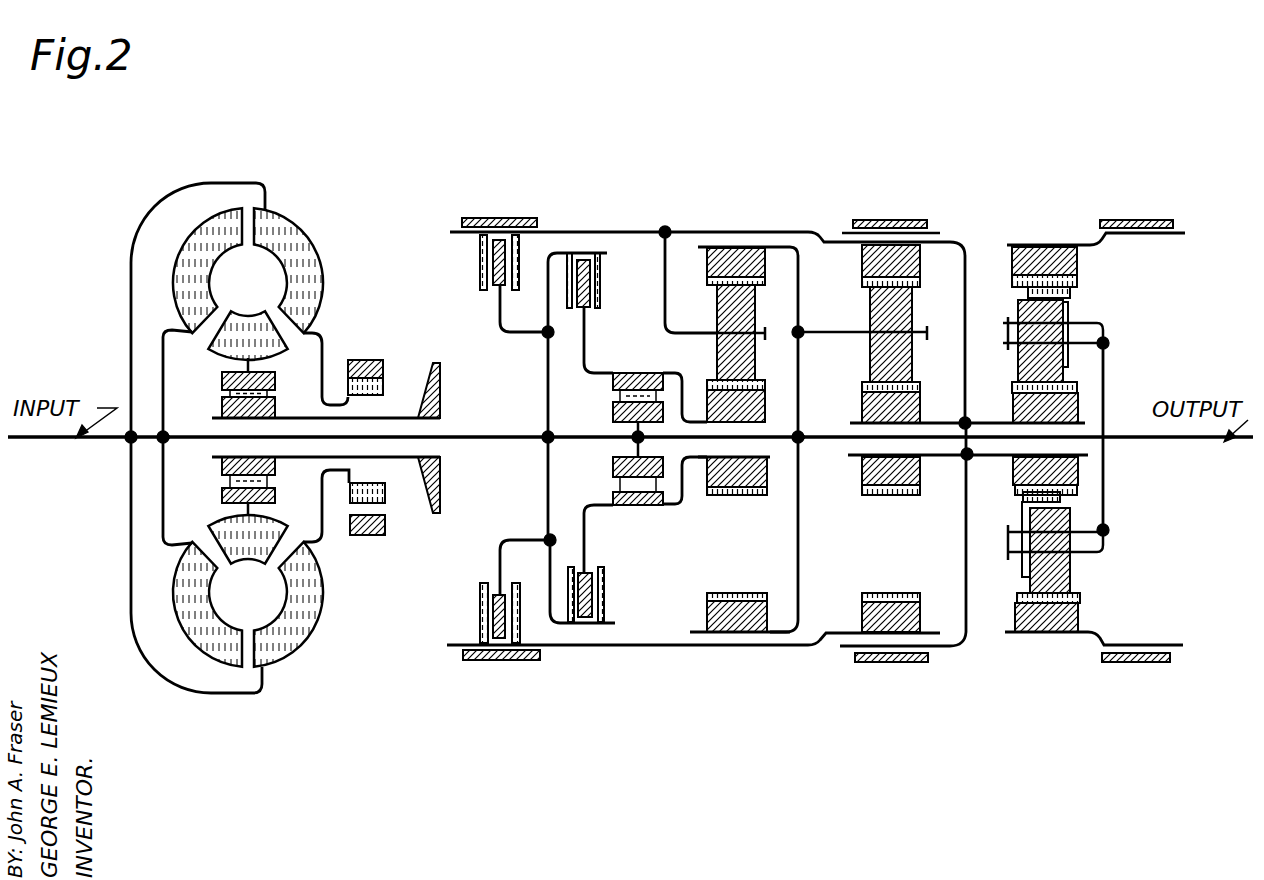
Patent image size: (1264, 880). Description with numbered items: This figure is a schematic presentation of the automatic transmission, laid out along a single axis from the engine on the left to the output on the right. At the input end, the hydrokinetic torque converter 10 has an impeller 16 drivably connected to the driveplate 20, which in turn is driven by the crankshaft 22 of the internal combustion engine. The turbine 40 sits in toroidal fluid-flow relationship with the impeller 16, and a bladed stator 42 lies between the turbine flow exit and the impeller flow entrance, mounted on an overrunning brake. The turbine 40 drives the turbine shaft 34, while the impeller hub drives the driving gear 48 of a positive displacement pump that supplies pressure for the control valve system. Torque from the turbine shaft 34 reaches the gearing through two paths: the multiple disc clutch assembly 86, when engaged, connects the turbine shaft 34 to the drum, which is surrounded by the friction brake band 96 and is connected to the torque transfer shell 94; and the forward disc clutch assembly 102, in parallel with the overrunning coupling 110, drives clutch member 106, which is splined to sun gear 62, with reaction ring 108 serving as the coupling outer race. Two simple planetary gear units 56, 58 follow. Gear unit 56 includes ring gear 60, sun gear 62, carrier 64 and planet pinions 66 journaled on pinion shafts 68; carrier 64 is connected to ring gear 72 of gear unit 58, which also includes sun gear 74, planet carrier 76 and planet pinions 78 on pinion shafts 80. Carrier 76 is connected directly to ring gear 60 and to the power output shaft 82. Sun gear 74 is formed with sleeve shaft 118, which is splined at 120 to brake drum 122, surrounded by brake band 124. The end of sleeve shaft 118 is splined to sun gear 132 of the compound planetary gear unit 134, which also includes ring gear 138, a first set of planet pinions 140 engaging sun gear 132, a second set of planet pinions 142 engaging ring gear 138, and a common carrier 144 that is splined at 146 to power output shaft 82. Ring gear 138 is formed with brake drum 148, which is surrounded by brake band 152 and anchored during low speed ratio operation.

The hydrokinetic torque converter 10 is at (216, 423).
The impeller 16 is at (311, 258).
The driveplate 20 is at (131, 290).
The crankshaft 22 is at (48, 440).
The turbine shaft 34 is at (482, 442).
The turbine 40 is at (192, 248).
The bladed stator 42 is at (245, 313).
The driving gear 48 is at (383, 363).
The simple planetary gear unit 56 is at (709, 247).
The simple planetary gear unit 58 is at (861, 246).
The ring gear 60 is at (737, 246).
The sun gear 62 is at (770, 395).
The carrier 64 is at (662, 288).
The planet pinions 66 is at (717, 308).
The pinion shafts 68 is at (670, 333).
The ring gear 72 is at (862, 263).
The sun gear 74 is at (862, 404).
The planet carrier 76 is at (798, 378).
The planet pinions 78 is at (870, 310).
The pinion shafts 80 is at (813, 335).
The power output shaft 82 is at (1225, 455).
The multiple disc clutch assembly 86 is at (476, 257).
The torque transfer shell 94 is at (640, 230).
The friction brake band 96 is at (510, 220).
The forward disc clutch assembly 102 is at (583, 252).
The clutch member 106 is at (613, 410).
The reaction ring 108 is at (613, 378).
The overrunning coupling 110 is at (637, 373).
The sleeve shaft 118 is at (946, 458).
The spline 120 is at (942, 418).
The brake drum 122 is at (950, 233).
The brake band 124 is at (905, 221).
The sun gear 132 is at (1078, 403).
The compound planetary gear unit 134 is at (1028, 271).
The ring gear 138 is at (1077, 262).
The first set of planet pinions 140 is at (1062, 315).
The second set of planet pinions 142 is at (1072, 563).
The common carrier 144 is at (1100, 358).
The spline 146 is at (1098, 498).
The brake drum 148 is at (1170, 237).
The brake band 152 is at (1135, 220).